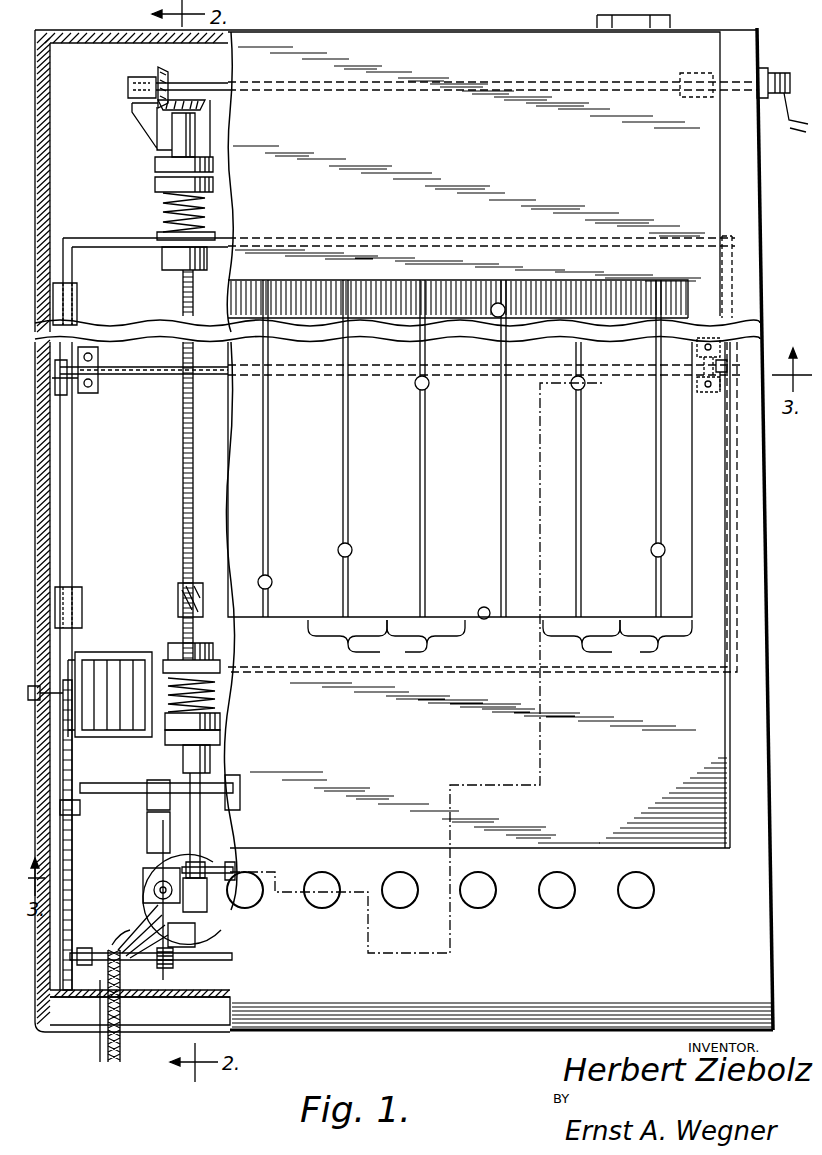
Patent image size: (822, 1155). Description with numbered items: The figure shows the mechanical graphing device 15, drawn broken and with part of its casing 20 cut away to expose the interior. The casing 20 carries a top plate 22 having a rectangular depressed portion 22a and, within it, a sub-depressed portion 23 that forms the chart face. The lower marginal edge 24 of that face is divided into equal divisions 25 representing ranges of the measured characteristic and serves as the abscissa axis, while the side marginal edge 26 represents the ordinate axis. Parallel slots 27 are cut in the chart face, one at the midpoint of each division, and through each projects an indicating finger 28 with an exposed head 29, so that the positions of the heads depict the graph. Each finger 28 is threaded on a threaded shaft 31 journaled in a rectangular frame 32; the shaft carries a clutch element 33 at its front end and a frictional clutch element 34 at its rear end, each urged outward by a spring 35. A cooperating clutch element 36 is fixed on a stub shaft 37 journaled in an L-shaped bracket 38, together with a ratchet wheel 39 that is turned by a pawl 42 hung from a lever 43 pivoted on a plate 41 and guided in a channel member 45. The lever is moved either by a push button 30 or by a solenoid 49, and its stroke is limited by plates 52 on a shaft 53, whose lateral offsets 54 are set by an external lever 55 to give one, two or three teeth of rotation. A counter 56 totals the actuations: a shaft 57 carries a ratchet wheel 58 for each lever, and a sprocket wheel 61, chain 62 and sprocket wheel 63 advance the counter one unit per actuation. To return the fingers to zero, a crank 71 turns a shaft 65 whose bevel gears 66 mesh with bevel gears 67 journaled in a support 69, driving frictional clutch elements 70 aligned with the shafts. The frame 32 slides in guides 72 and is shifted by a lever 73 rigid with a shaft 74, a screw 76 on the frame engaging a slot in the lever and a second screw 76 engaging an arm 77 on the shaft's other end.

The mechanical graphing device 15 is at (490, 1033).
The casing 20 is at (773, 770).
The top plate 22 is at (703, 936).
The rectangular depressed portion 22a is at (640, 722).
The sub-depressed portion 23 is at (478, 526).
The lower marginal edge 24 is at (486, 619).
The divisions 25 is at (500, 641).
The side marginal edge 26 is at (692, 515).
The slots 27 is at (422, 503).
The indicating finger 28 is at (178, 600).
The exposed head 29 is at (503, 305).
The push buttons 30 is at (392, 878).
The threaded shaft 31 is at (183, 518).
The frame 32 is at (72, 522).
The clutch element 33 is at (220, 720).
The frictional clutch element 34 is at (213, 184).
The spring 35 is at (205, 212).
The cooperating clutch element 36 is at (220, 740).
The stub shaft 37 is at (200, 825).
The L-shaped bracket 38 is at (210, 763).
The ratchet wheel 39 is at (235, 868).
The plate 41 is at (190, 1019).
The pawl 42 is at (150, 868).
The lever 43 is at (150, 918).
The channel member 45 is at (154, 890).
The solenoid 49 is at (118, 945).
The plates 52 is at (160, 780).
The shaft 53 is at (105, 783).
The lateral offsets 54 is at (147, 833).
The lever 55 is at (80, 808).
The counter 56 is at (128, 652).
The shaft 57 is at (225, 960).
The ratchet wheel 58 is at (173, 962).
The sprocket wheel 61 is at (73, 970).
The chain 62 is at (72, 857).
The sprocket wheel 63 is at (72, 665).
The shaft 65 is at (208, 82).
The bevel gears 66 is at (163, 67).
The bevel gear 67 is at (205, 103).
The support 69 is at (205, 133).
The frictional clutch element 70 is at (213, 163).
The crank 71 is at (778, 116).
The guides 72 is at (77, 300).
The lever 73 is at (67, 395).
The shaft 74 is at (148, 372).
The screw 76 is at (58, 378).
The arm 77 is at (720, 350).